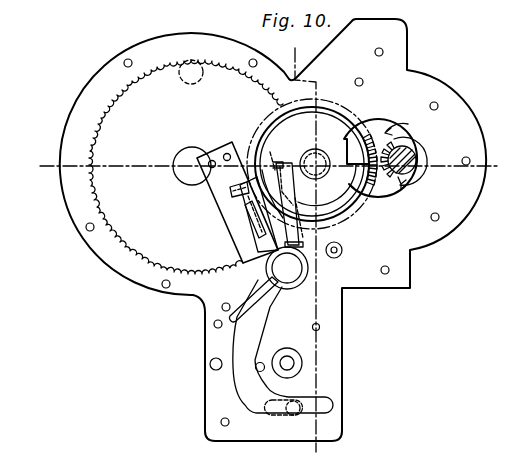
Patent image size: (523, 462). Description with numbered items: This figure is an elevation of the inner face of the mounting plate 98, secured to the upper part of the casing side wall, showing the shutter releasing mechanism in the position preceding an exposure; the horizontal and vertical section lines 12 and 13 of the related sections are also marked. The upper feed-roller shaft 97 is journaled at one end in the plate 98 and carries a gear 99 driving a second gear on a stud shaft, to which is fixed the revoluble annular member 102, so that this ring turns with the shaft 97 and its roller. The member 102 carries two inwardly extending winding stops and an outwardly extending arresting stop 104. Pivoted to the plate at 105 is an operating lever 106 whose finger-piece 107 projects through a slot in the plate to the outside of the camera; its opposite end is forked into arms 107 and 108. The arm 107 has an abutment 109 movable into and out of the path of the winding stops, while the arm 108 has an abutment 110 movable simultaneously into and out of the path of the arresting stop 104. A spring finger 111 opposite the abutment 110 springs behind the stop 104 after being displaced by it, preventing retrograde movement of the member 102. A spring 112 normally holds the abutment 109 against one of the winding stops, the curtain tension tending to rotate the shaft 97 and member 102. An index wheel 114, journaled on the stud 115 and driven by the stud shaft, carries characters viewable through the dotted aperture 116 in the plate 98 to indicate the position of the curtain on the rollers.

The section line 12— 12 is at (277, 163).
The section line 13— 13 is at (306, 246).
The shaft 97 is at (410, 152).
The plate 98 is at (213, 57).
The gear 99 is at (401, 184).
The revoluble annular member 102 is at (334, 121).
The arresting stop 104 is at (252, 138).
The pivot 105 is at (287, 268).
The operating lever 106 is at (250, 328).
The finger-piece / arm 107 is at (293, 202).
The arm 108 is at (253, 215).
The abutment 109 is at (301, 191).
The abutment 110 is at (228, 197).
The spring finger 111 is at (257, 211).
The spring 112 is at (255, 293).
The index wheel 114 is at (170, 133).
The stud 115 is at (190, 173).
The aperture 116 is at (182, 80).